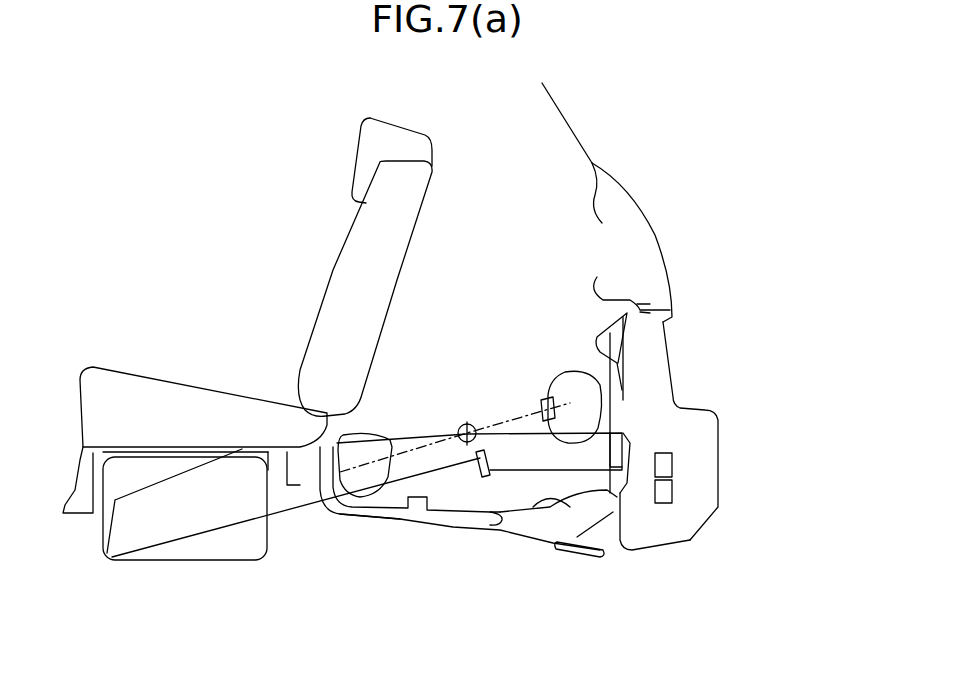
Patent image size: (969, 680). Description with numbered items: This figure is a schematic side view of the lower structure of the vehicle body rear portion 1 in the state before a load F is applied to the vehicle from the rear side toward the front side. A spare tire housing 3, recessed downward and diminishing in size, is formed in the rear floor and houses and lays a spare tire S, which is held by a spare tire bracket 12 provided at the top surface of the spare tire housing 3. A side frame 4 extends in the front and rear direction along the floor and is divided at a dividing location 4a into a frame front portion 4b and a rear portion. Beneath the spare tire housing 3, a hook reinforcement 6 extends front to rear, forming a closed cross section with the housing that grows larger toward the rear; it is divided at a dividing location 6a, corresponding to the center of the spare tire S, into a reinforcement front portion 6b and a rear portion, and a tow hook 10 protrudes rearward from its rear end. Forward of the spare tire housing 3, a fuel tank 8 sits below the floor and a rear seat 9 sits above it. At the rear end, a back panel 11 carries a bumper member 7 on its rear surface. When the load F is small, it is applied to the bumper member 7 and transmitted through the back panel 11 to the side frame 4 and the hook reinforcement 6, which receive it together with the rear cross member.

The vehicle body rear portion 1 is at (580, 82).
The spare tire housing 3 is at (573, 500).
The side frame 4 is at (509, 416).
The dividing location 4a is at (405, 447).
The frame front portion 4b is at (600, 388).
The hook reinforcement 6 is at (450, 538).
The dividing location 6a is at (403, 527).
The reinforcement front portion 6b is at (512, 525).
The bumper member 7 is at (660, 460).
The fuel tank 8 is at (167, 553).
The rear seat 9 is at (420, 170).
The tow hook 10 is at (568, 552).
The back panel 11 is at (620, 380).
The spare tire bracket 12 is at (467, 513).
The spare tire S is at (557, 383).
The load F is at (735, 479).